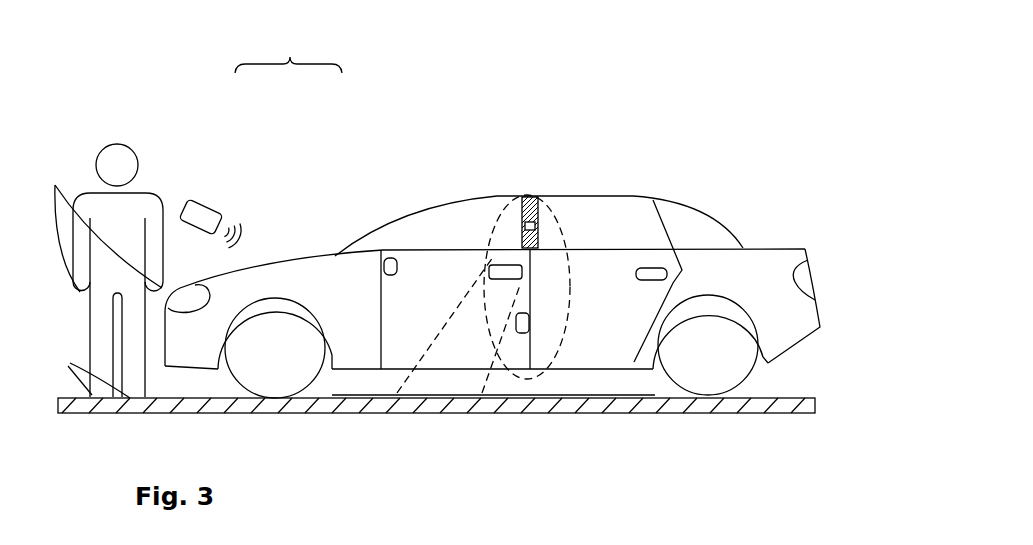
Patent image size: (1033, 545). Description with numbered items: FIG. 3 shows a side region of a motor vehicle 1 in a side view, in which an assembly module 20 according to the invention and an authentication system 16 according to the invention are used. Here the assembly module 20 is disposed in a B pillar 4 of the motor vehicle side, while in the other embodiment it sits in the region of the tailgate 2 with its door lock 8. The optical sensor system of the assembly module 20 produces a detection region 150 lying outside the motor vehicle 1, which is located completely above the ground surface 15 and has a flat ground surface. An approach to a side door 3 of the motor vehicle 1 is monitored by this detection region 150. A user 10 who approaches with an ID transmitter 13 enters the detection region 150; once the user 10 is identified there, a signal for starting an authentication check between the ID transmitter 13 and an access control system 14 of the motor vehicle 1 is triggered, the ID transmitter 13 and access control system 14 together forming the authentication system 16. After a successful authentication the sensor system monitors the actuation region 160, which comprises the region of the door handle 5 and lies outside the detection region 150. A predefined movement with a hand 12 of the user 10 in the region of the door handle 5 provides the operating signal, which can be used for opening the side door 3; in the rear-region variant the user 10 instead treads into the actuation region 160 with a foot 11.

The motor vehicle 1 is at (740, 150).
The tailgate 2 is at (778, 247).
The side door 3 is at (423, 273).
The B pillar 4 is at (578, 193).
The door handle 5 is at (500, 262).
The door lock 8 is at (523, 327).
The user 10 is at (108, 132).
The foot 11 is at (94, 366).
The hand 12 is at (102, 224).
The ID transmitter 13 is at (197, 214).
The access control system 14 is at (383, 257).
The ground surface 15 is at (792, 413).
The authentication system 16 is at (288, 52).
The assembly module 20 is at (538, 196).
The detection region 150 is at (553, 263).
The actuation region 160 is at (510, 262).